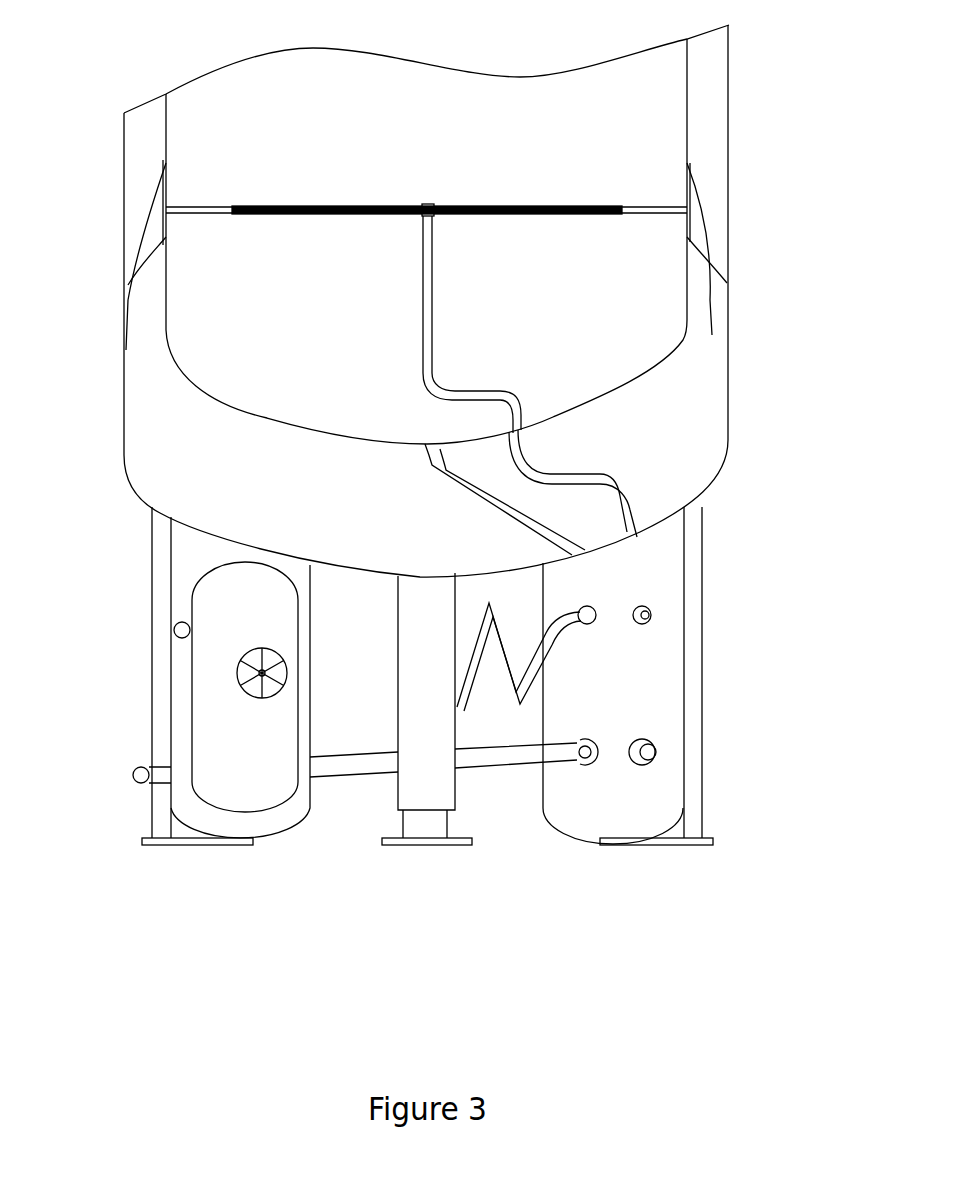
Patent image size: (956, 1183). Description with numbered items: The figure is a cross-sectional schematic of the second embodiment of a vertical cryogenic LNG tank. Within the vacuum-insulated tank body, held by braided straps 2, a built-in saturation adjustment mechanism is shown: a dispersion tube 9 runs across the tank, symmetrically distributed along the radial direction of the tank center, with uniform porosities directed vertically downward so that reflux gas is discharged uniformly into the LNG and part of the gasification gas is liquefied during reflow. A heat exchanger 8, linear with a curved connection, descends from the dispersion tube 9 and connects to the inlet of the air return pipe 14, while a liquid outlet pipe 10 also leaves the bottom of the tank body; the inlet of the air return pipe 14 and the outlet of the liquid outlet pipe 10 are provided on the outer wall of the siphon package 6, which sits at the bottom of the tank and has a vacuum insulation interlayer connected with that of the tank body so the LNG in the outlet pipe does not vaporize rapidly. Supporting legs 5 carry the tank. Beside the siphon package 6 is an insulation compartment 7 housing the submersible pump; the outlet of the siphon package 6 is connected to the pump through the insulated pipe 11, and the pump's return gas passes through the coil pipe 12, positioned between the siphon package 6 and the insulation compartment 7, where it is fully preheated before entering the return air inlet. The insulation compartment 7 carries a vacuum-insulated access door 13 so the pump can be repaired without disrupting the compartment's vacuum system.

The braided straps 2 is at (145, 225).
The dispersion tube 9 is at (537, 207).
The heat exchanger 8 is at (520, 430).
The liquid outlet pipe 10 is at (527, 510).
The air return pipe 14 is at (622, 487).
The supporting legs 5 is at (153, 563).
The insulation compartment 7 is at (183, 728).
The access door 13 is at (217, 768).
The insulated pipe 11 is at (470, 757).
The coil pipe 12 is at (503, 645).
The siphon package 6 is at (653, 690).